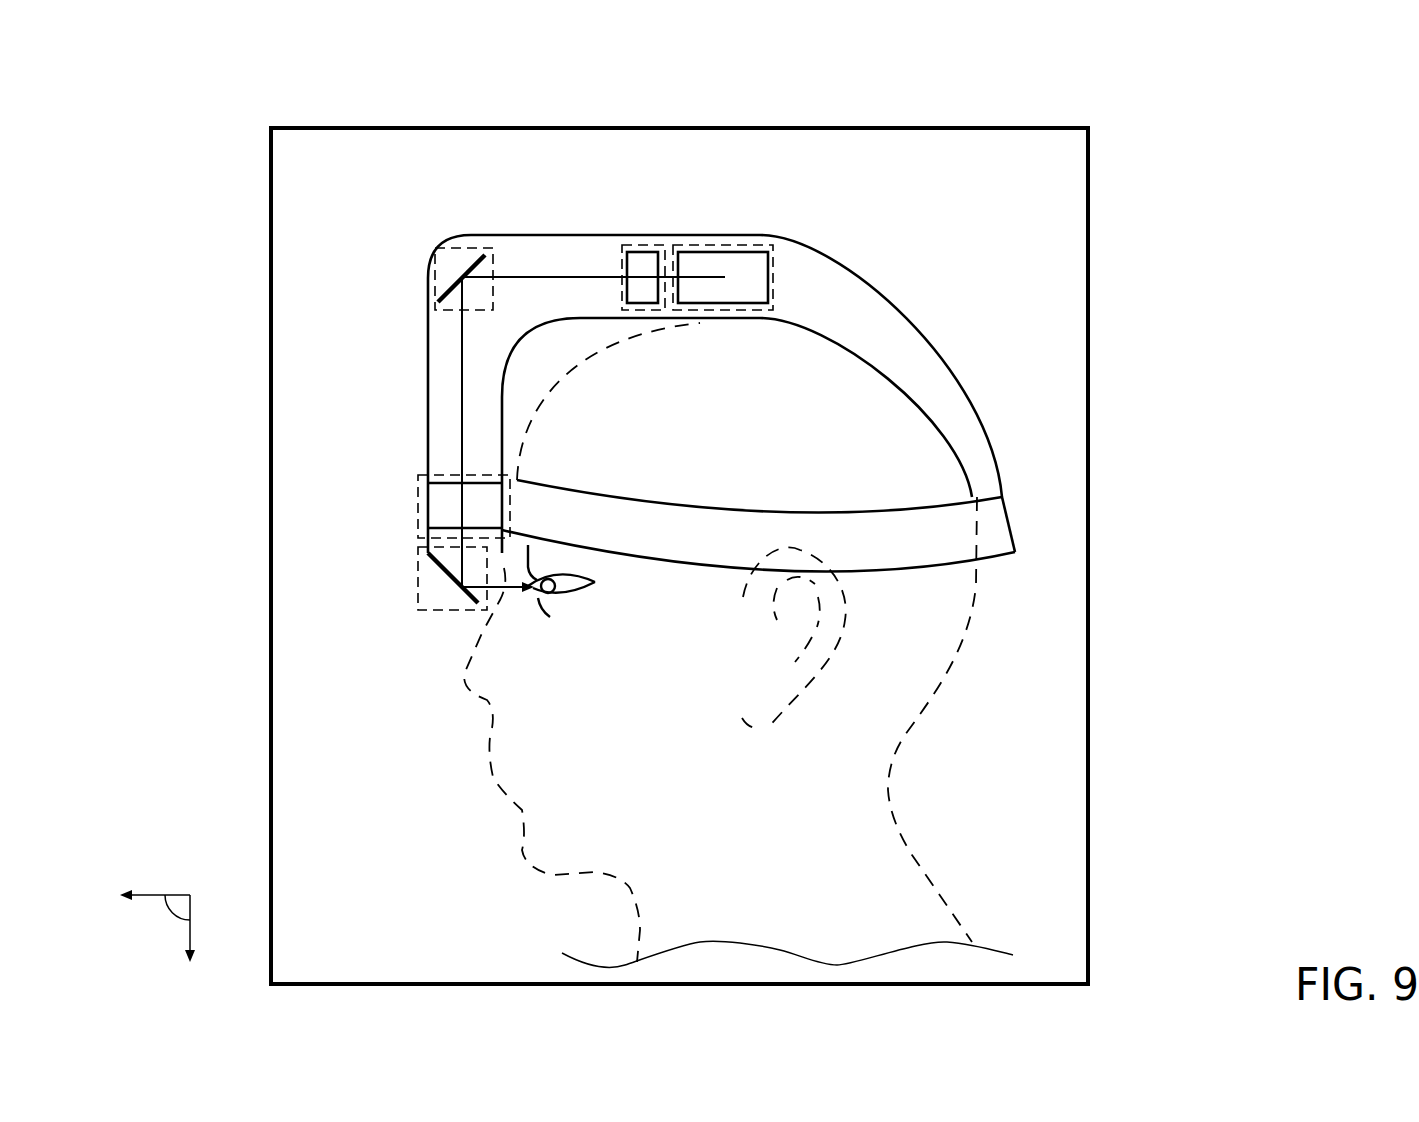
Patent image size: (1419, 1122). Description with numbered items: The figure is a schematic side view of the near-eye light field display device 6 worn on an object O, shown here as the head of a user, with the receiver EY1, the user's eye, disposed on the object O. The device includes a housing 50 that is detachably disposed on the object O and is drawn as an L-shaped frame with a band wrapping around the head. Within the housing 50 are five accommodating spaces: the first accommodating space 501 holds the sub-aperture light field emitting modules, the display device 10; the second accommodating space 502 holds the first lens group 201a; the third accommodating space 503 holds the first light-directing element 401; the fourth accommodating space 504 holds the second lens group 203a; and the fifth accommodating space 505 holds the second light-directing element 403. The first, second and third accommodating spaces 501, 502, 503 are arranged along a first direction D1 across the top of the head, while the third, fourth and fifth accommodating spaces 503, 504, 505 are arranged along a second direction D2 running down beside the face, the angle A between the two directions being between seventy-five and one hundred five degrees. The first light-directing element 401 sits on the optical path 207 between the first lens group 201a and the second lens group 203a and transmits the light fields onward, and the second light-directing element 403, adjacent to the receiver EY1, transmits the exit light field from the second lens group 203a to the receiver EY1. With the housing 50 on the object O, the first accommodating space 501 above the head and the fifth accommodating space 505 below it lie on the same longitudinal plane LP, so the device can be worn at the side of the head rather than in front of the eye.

The near-eye light field display device 6 is at (173, 165).
The display device 10 is at (745, 265).
The housing 50 is at (880, 310).
The first lens group 201a is at (642, 263).
The second lens group 203a is at (447, 505).
The optical path 207 is at (460, 392).
The first light-directing element 401 is at (460, 266).
The second light-directing element 403 is at (445, 578).
The first accommodating space 501 is at (700, 245).
The second accommodating space 502 is at (620, 266).
The third accommodating space 503 is at (484, 248).
The fourth accommodating space 504 is at (413, 478).
The fifth accommodating space 505 is at (413, 608).
The longitudinal plane LP is at (1048, 532).
The object O is at (810, 830).
The receiver EY1 is at (550, 592).
The first direction D1 is at (136, 897).
The second direction D2 is at (191, 946).
The angle A is at (171, 916).